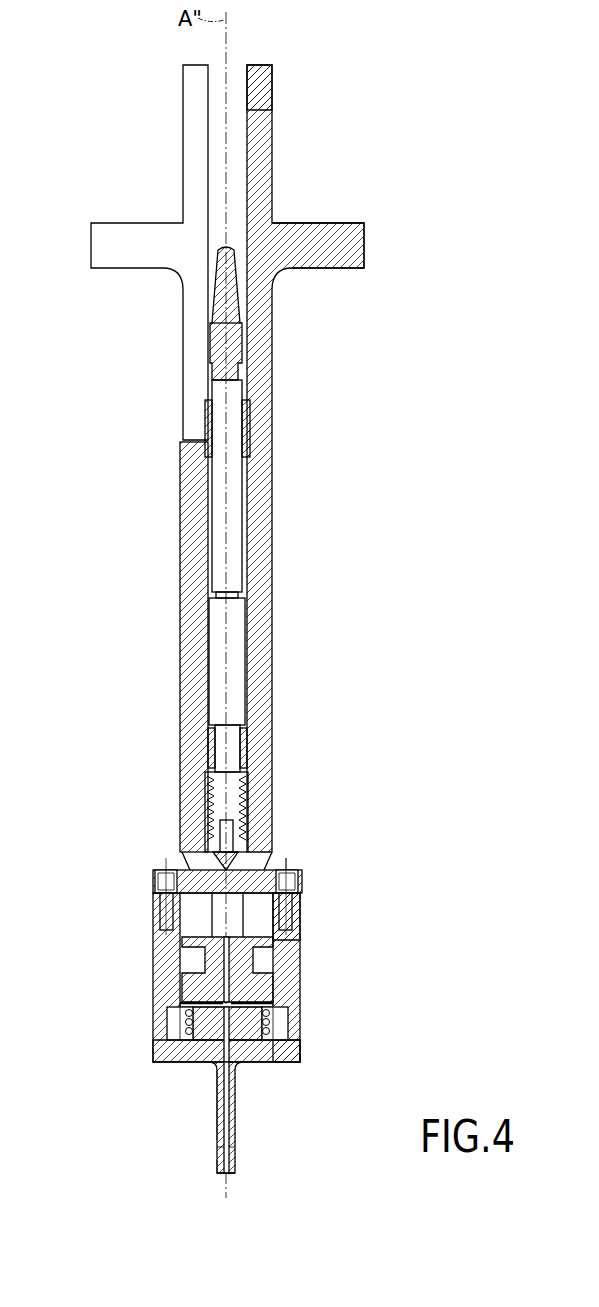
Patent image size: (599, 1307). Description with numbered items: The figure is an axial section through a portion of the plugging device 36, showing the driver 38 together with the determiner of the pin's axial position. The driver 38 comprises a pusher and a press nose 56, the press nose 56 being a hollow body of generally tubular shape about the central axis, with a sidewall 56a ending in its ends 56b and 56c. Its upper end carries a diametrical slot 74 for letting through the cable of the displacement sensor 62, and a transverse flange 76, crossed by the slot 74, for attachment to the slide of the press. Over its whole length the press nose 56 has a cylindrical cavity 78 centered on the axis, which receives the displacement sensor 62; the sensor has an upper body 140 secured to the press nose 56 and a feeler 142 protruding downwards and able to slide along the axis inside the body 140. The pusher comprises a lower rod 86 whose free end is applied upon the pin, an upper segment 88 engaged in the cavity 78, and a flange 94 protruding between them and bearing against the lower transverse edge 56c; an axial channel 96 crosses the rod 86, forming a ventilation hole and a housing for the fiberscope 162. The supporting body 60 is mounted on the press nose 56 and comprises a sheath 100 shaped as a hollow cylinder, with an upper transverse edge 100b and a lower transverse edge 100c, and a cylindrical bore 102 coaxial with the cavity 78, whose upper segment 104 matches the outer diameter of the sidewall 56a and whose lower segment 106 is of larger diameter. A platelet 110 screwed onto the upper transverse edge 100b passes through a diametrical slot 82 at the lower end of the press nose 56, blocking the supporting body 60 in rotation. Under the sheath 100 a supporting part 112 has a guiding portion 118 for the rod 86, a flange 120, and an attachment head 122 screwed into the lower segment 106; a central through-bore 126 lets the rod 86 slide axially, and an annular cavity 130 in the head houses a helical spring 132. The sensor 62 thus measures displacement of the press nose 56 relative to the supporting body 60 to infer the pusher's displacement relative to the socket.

The plugging device 36 is at (378, 671).
The driver 38 is at (290, 647).
The press nose 56 is at (285, 372).
The sidewall 56a is at (263, 748).
The upper end 56b is at (262, 65).
The lower transverse edge 56c is at (262, 990).
The supporting body 60 is at (303, 1050).
The displacement sensor 62 is at (224, 243).
The diametrical slot 74 is at (195, 338).
The transverse flange 76 is at (347, 223).
The cavity 78 is at (238, 146).
The diametrical slot 82 is at (292, 862).
The rod 86 is at (236, 1160).
The upper segment 88 is at (275, 945).
The flange 94 is at (292, 1000).
The axial channel 96 is at (232, 1117).
The sheath 100 is at (300, 932).
The upper transverse edge 100b is at (300, 898).
The lower transverse edge 100c is at (302, 1062).
The cylindrical bore 102 is at (186, 912).
The upper segment 104 is at (182, 955).
The lower segment 106 is at (187, 1019).
The platelet 110 is at (300, 880).
The supporting part 112 is at (283, 1064).
The guiding portion 118 is at (216, 1150).
The flange 120 is at (160, 1062).
The attachment head 122 is at (157, 1033).
The central through-bore 126 is at (238, 1150).
The annular cavity 130 is at (300, 1022).
The helical spring 132 is at (172, 1003).
The upper body 140 is at (232, 435).
The feeler 142 is at (240, 848).
The fiberscope 162 is at (214, 1105).